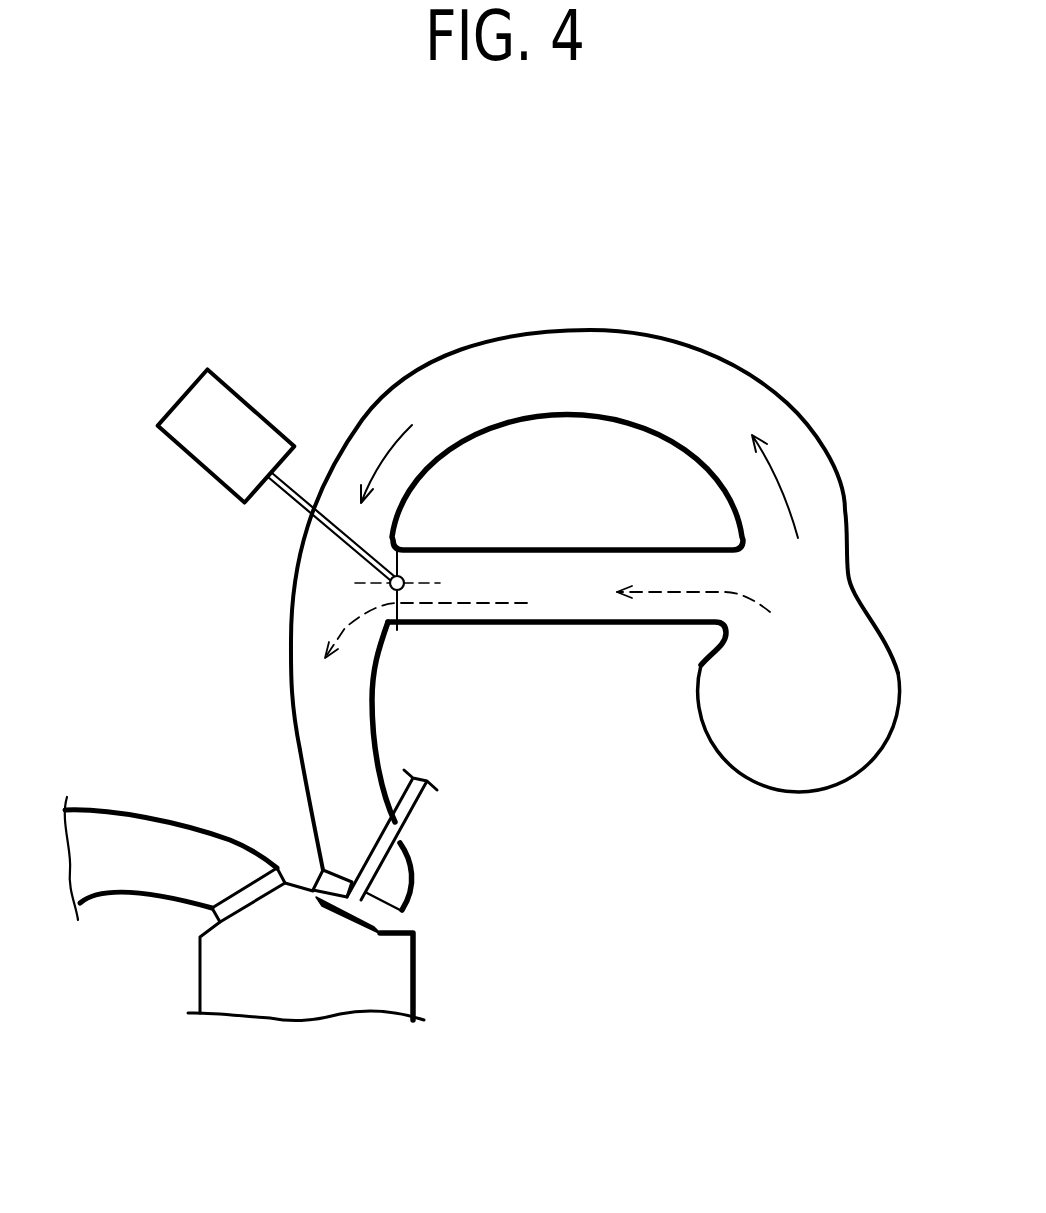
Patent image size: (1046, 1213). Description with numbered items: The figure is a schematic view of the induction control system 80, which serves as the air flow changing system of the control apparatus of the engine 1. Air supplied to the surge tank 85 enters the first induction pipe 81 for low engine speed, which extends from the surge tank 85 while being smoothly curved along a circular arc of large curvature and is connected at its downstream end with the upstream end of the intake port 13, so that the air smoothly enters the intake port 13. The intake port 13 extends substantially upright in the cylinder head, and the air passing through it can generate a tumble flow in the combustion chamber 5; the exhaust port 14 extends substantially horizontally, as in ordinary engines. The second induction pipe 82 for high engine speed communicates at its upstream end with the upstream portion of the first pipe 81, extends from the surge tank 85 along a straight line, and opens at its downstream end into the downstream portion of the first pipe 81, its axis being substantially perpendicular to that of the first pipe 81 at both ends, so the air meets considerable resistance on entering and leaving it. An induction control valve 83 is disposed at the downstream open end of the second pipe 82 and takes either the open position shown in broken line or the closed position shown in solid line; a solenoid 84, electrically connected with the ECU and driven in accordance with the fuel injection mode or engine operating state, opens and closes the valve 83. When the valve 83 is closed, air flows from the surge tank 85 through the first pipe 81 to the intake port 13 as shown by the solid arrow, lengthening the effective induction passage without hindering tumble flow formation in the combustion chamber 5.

The engine 1 is at (413, 983).
The combustion chamber 5 is at (215, 967).
The intake port 13 is at (307, 695).
The exhaust port 14 is at (100, 832).
The induction control system 80 is at (736, 345).
The first induction pipe 81 is at (542, 347).
The second induction pipe 82 is at (575, 605).
The induction control valve 83 is at (398, 565).
The solenoid 84 is at (188, 392).
The surge tank 85 is at (825, 760).